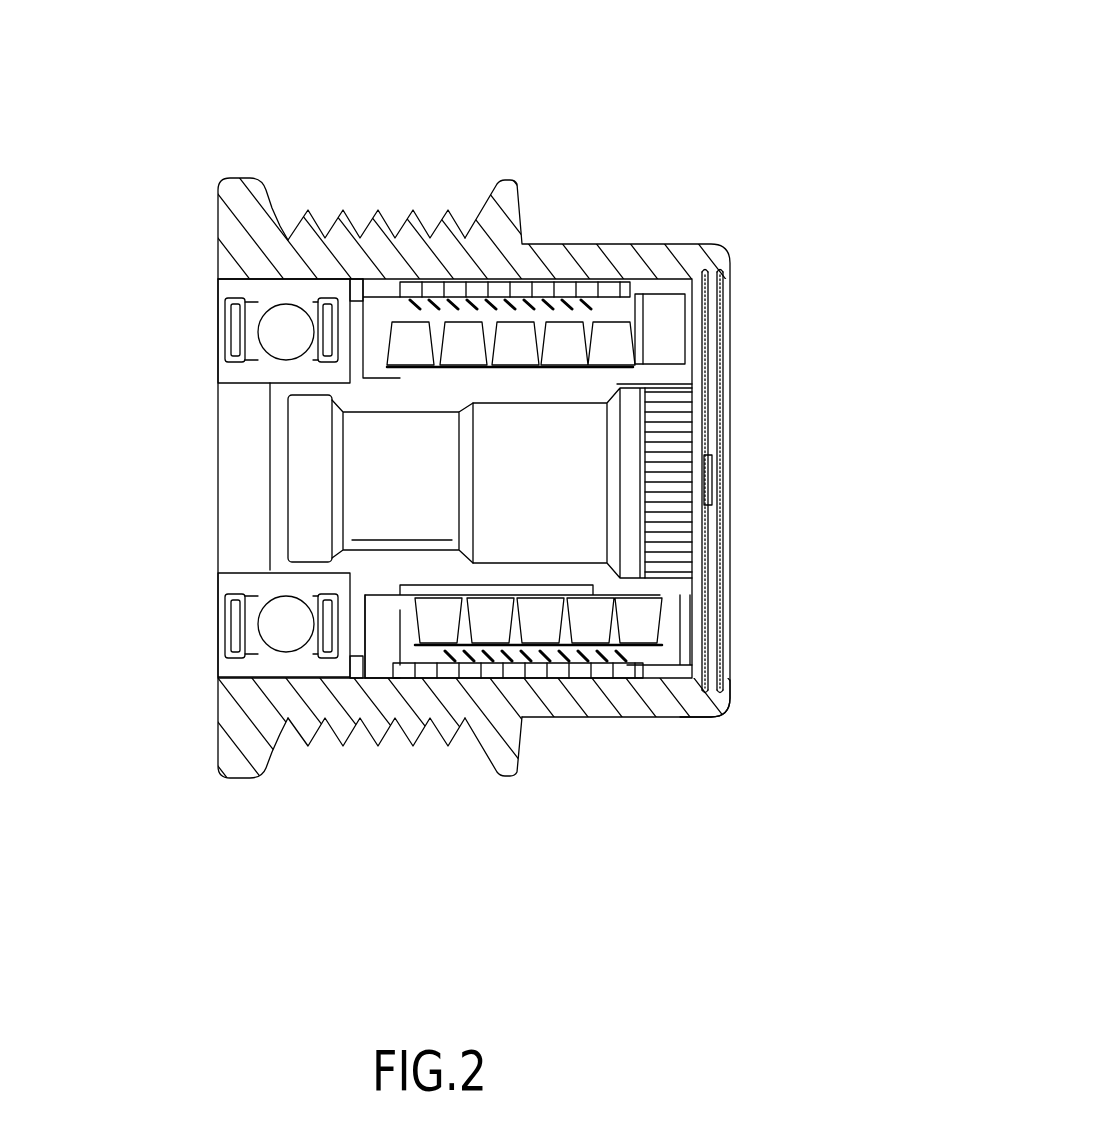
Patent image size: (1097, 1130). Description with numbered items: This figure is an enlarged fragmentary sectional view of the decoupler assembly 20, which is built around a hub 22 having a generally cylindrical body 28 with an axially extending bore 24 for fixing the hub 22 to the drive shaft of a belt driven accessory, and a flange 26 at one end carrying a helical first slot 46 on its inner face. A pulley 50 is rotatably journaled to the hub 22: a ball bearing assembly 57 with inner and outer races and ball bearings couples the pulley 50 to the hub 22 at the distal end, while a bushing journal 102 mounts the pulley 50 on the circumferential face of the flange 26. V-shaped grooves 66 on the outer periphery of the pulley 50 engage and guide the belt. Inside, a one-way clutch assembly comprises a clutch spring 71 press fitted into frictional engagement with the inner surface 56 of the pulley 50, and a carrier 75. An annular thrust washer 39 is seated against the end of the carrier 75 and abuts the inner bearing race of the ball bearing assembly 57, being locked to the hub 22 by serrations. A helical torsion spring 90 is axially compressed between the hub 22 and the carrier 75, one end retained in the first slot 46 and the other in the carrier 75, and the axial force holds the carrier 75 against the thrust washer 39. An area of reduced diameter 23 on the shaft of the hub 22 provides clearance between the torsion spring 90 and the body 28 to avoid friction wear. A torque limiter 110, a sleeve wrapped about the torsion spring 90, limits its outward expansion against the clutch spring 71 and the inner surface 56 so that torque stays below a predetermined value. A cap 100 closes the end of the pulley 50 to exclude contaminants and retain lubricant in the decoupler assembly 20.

The decoupler assembly 20 is at (745, 169).
The hub 22 is at (680, 622).
The area of reduced diameter 23 is at (540, 372).
The axially extending bore 24 is at (421, 504).
The flange 26 is at (692, 718).
The generally cylindrical body 28 is at (480, 572).
The annular thrust washer 39 is at (348, 276).
The helical first slot 46 is at (660, 307).
The pulley 50 is at (513, 763).
The inner surface 56 is at (550, 685).
The ball bearing assembly 57 is at (218, 368).
The V-shaped grooves 66 is at (418, 222).
The clutch spring 71 is at (452, 660).
The carrier 75 is at (383, 657).
The torsion spring 90 is at (674, 348).
The cap 100 is at (730, 467).
The bushing journal 102 is at (630, 680).
The torque limiter 110 is at (552, 290).